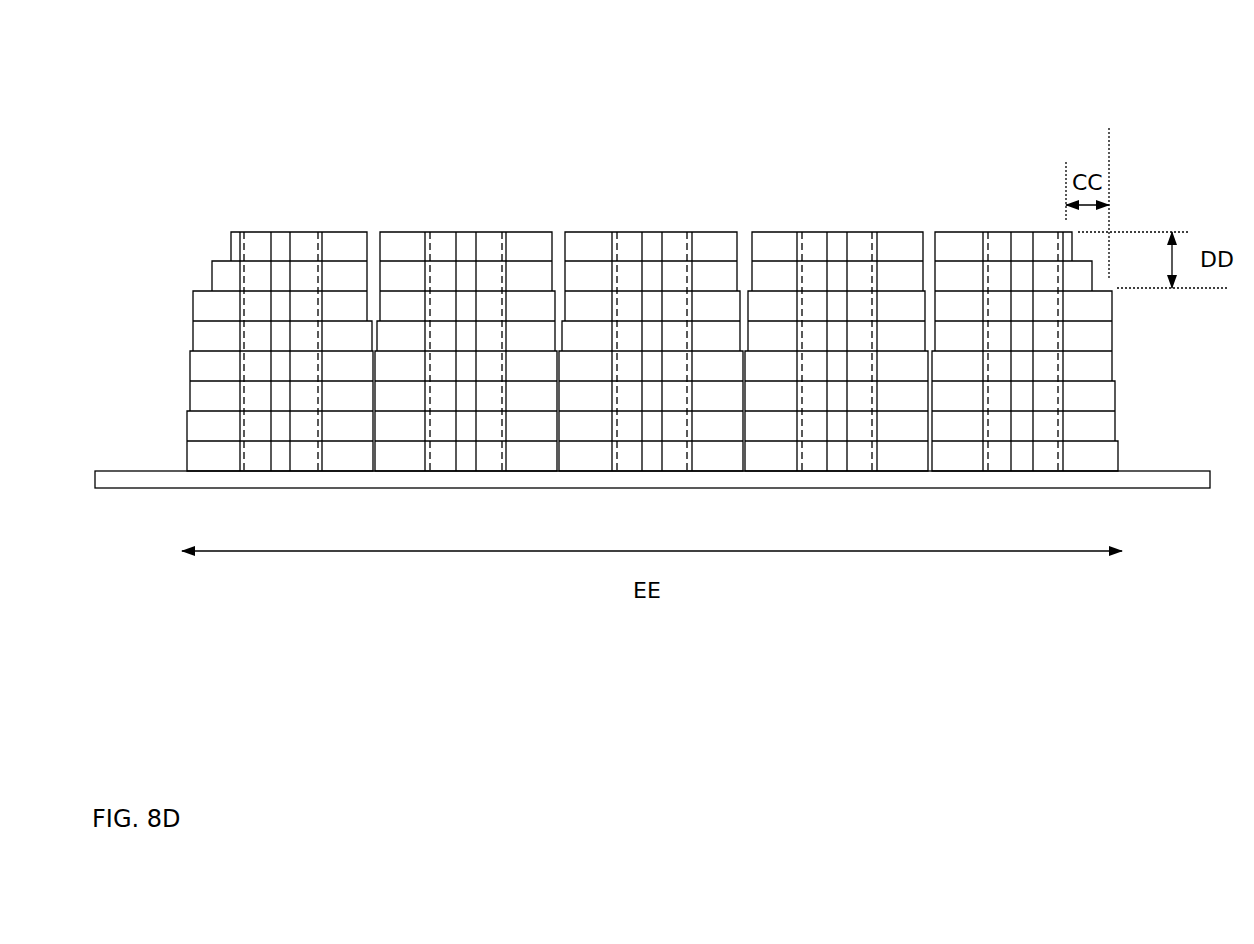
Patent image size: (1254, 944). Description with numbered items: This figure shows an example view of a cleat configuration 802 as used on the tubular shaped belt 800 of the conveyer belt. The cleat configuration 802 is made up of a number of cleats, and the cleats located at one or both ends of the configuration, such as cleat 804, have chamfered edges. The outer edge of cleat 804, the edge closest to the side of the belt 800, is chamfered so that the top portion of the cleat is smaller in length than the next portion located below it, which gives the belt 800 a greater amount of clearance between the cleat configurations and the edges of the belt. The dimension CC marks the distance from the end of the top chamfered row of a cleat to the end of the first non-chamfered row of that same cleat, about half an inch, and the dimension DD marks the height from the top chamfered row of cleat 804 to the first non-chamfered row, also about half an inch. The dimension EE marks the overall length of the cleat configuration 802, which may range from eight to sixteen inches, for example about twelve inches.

The tubular shaped belt 800 is at (270, 162).
The cleat configuration 802 is at (1113, 569).
The cleat 804 is at (1020, 212).